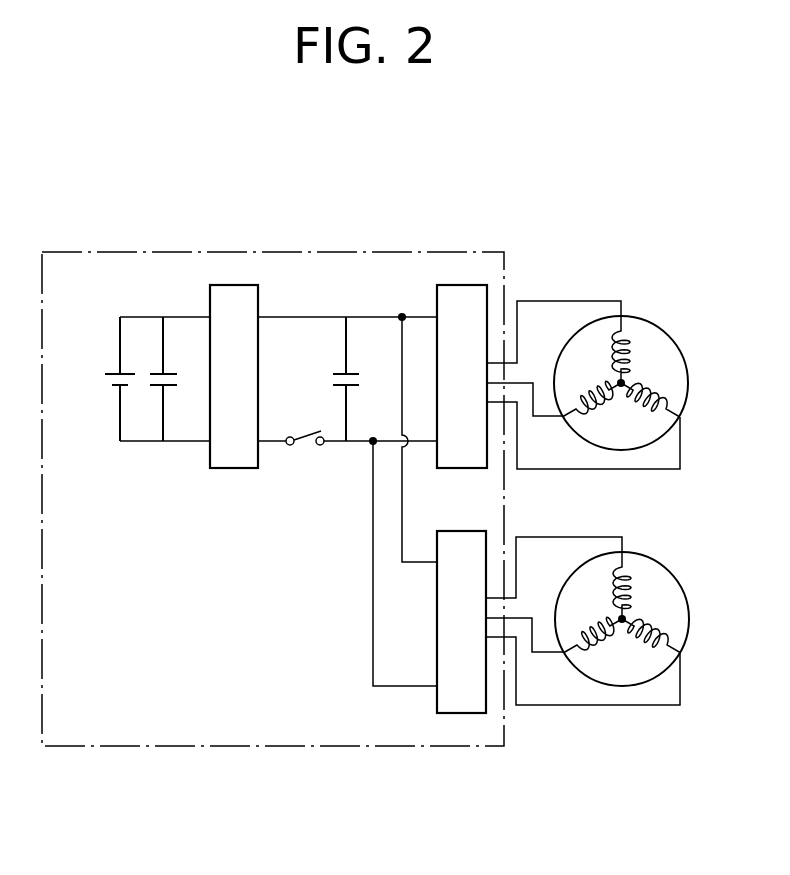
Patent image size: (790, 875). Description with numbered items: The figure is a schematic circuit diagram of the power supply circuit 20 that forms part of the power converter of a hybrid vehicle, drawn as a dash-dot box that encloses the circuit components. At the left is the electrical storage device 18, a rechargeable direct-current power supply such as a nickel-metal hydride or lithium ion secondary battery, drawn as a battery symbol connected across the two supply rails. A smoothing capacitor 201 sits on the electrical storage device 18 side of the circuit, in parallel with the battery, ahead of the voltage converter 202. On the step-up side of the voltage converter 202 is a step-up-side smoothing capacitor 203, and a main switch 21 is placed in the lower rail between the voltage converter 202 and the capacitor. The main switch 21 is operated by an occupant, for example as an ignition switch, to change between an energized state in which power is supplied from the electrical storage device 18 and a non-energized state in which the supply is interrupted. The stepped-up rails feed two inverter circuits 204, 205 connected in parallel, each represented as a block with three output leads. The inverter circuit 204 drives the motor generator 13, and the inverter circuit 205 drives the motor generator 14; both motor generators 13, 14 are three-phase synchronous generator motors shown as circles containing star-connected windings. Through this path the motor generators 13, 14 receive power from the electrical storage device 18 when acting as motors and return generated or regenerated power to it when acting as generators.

The motor generator 13 is at (645, 320).
The motor generator 14 is at (646, 556).
The electrical storage device 18 is at (113, 368).
The power supply circuit 20 is at (485, 252).
The main switch 21 is at (300, 436).
The smoothing capacitor 201 is at (172, 368).
The voltage converter 202 is at (226, 470).
The step-up-side smoothing capacitor 203 is at (338, 372).
The inverter circuit 204 is at (450, 285).
The inverter circuit 205 is at (447, 714).